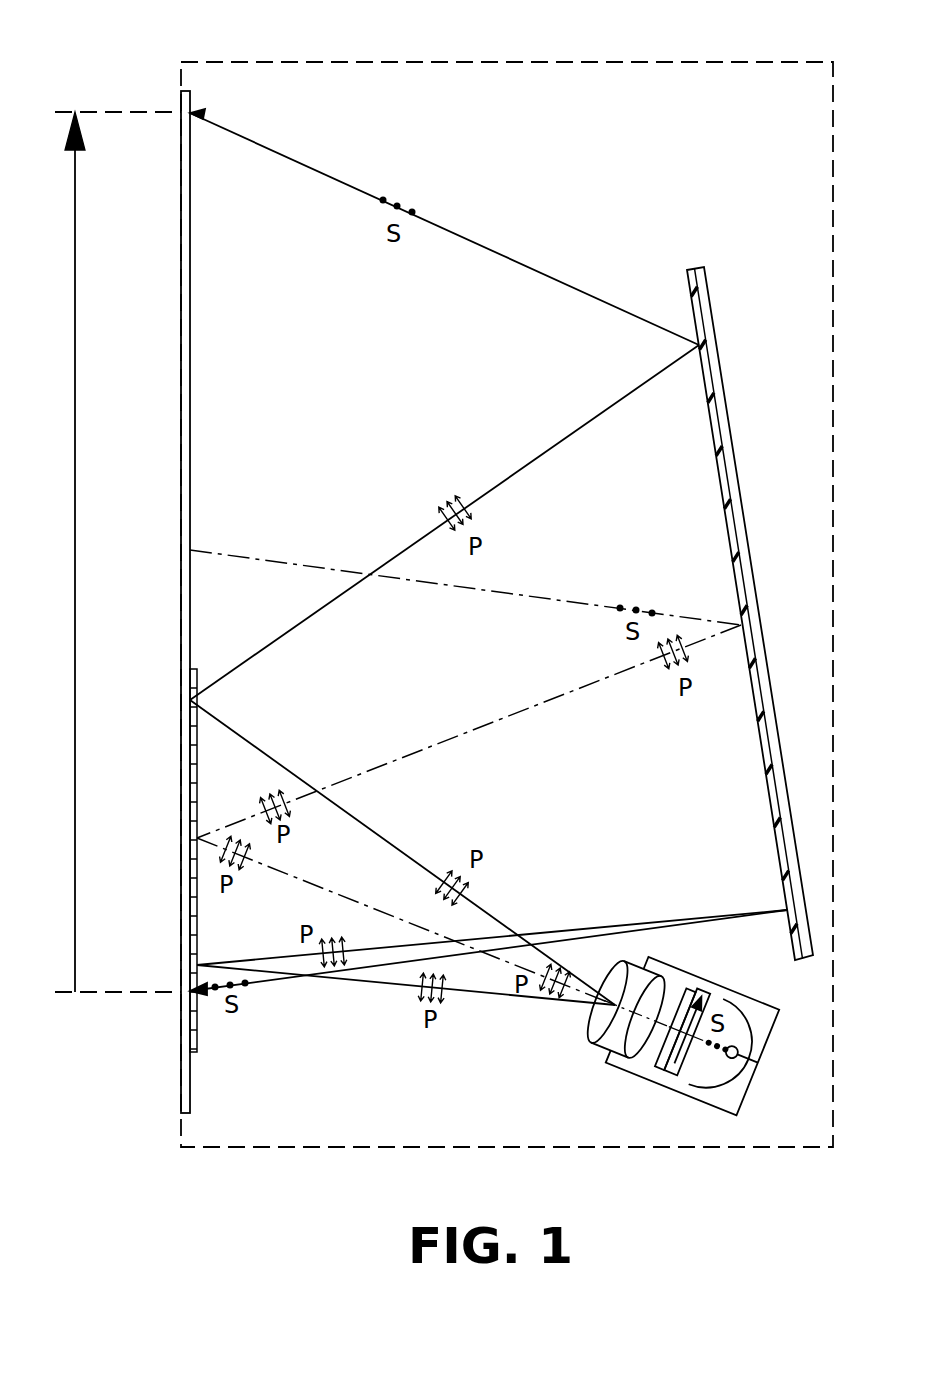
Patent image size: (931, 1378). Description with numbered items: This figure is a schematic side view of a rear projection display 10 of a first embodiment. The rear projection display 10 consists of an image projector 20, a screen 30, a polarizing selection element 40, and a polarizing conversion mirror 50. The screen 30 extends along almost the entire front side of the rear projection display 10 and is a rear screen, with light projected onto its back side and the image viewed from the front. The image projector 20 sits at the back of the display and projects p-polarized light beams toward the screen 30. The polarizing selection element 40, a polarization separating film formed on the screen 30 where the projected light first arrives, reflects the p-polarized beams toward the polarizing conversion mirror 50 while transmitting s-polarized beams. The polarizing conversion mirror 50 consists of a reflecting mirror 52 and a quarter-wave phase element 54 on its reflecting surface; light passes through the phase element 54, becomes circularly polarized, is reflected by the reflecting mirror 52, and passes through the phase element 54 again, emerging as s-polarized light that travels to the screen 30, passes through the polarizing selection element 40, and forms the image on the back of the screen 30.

The rear projection display 10 is at (481, 19).
The image projector 20 is at (623, 1038).
The screen 30 is at (183, 95).
The polarizing selection element 40 is at (197, 672).
The polarizing conversion mirror 50 is at (717, 559).
The reflecting mirror 52 is at (707, 282).
The λ/4 phase element 54 is at (690, 290).